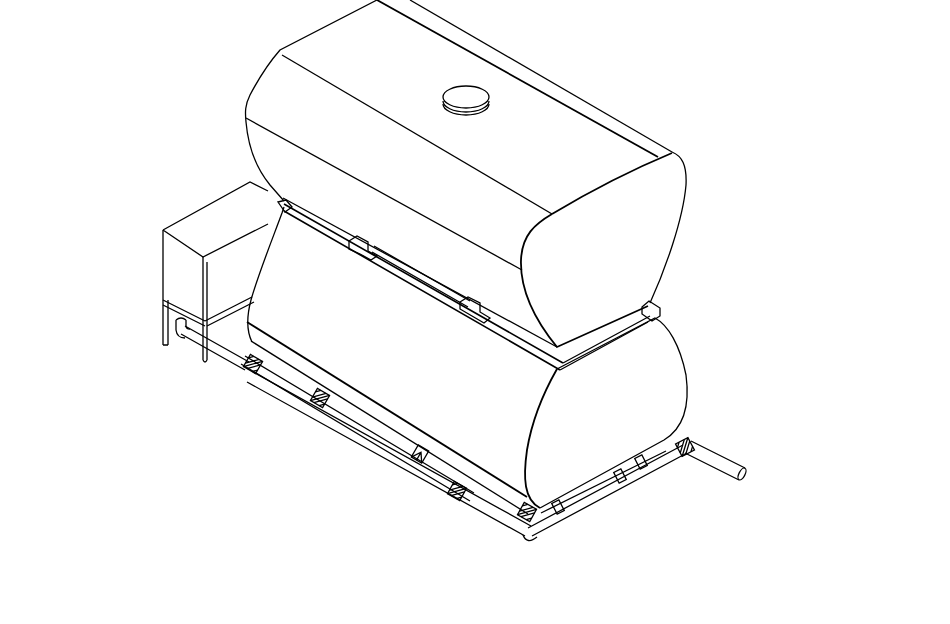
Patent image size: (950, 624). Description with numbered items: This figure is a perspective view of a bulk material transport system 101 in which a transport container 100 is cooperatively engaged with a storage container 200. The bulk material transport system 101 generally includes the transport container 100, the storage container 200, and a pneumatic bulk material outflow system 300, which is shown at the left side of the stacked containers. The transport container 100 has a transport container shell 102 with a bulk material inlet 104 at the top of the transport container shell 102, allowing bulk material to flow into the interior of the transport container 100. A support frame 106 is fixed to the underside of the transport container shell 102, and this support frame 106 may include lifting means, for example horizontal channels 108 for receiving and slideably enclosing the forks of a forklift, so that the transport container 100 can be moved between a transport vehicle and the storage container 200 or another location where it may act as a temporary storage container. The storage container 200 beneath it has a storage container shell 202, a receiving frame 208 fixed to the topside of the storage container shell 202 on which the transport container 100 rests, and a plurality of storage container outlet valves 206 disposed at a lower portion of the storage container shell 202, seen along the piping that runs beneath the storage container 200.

The bulk material transport system 101 is at (812, 27).
The transport container 100 is at (623, 259).
The transport container shell 102 is at (580, 156).
The bulk material inlet 104 is at (470, 97).
The support frame 106 is at (650, 303).
The horizontal channels 108 is at (477, 305).
The storage container 200 is at (623, 431).
The storage container shell 202 is at (498, 402).
The storage container outlet valves 206 is at (455, 490).
The receiving frame 208 is at (395, 268).
The pneumatic bulk material outflow system 300 is at (143, 218).